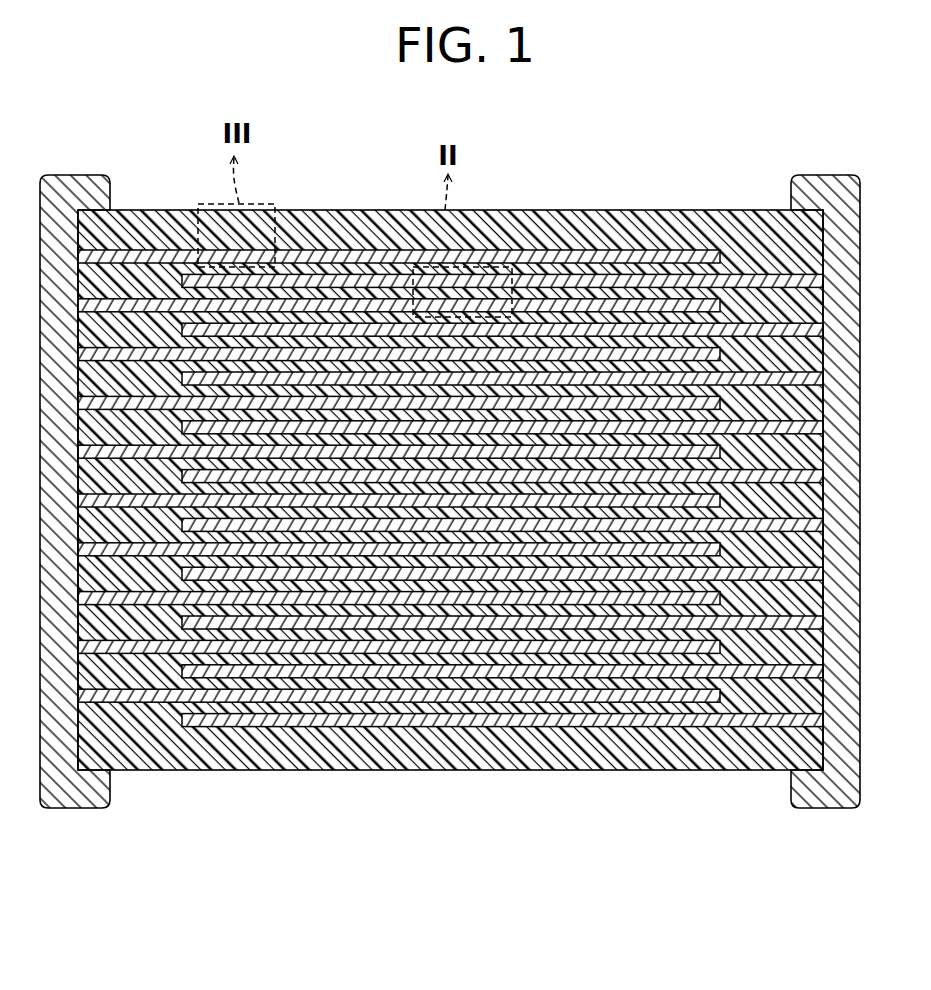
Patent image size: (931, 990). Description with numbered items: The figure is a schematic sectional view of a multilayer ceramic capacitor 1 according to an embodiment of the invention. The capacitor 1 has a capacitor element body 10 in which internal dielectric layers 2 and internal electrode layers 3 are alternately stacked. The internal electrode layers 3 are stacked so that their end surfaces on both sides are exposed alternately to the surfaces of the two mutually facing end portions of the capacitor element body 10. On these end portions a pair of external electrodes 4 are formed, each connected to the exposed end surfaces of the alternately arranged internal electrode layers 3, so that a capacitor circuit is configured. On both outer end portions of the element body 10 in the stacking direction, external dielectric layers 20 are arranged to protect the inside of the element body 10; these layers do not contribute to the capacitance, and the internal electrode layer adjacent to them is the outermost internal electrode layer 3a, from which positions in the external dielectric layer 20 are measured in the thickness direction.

The multilayer ceramic capacitor 1 is at (450, 517).
The internal dielectric layer 2 is at (327, 273).
The internal electrode layer 3 is at (450, 480).
The outermost internal electrode layer 3a is at (553, 250).
The external electrode 4 is at (826, 185).
The capacitor element body 10 is at (450, 497).
The external dielectric layer 20 is at (645, 232).